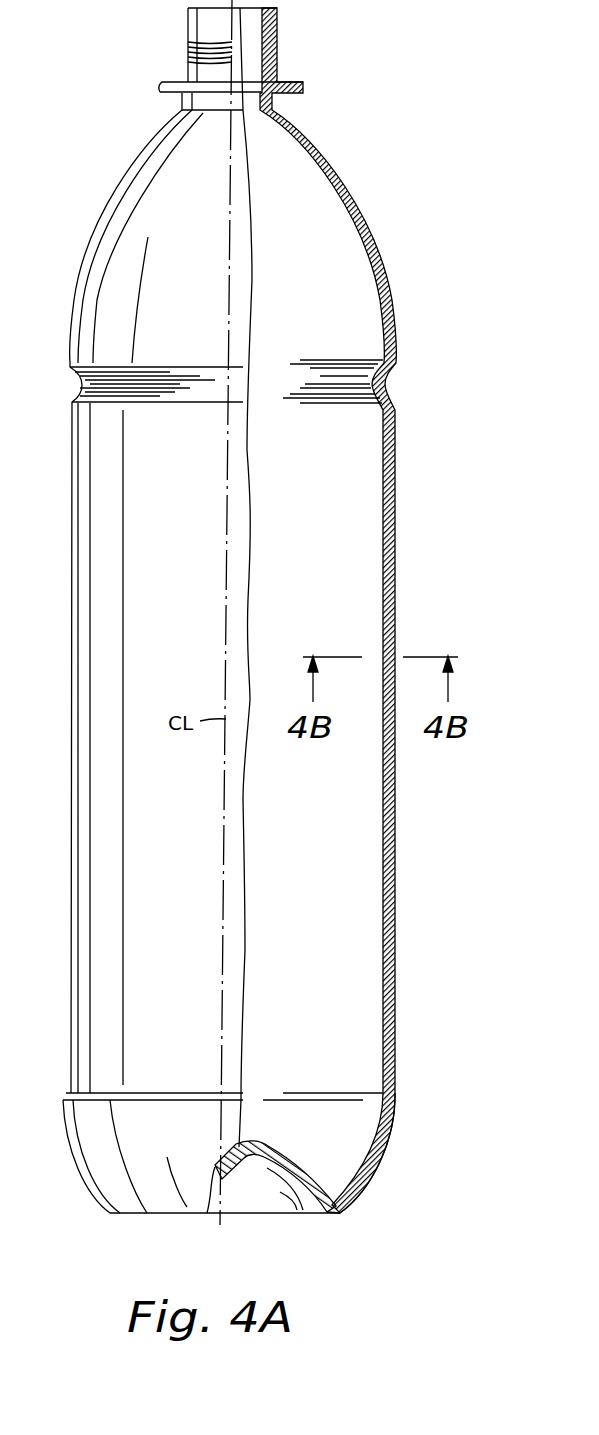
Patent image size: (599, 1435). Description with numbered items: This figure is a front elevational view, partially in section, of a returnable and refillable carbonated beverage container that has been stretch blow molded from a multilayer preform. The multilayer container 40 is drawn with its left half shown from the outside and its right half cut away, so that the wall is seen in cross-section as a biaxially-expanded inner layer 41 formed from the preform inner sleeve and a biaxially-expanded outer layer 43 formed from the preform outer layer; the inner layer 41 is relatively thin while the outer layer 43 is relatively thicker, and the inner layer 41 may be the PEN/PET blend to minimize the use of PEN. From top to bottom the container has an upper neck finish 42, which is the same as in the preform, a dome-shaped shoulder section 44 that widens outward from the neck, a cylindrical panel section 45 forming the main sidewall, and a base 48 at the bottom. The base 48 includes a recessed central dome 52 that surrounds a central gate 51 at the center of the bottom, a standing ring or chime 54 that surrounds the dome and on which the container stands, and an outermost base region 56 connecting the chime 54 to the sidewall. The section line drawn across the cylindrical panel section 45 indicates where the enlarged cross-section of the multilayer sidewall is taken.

The multilayer container 40 is at (408, 582).
The inner layer 41 is at (382, 835).
The upper neck finish 42 is at (278, 37).
The outer layer 43 is at (395, 832).
The dome-shaped shoulder section 44 is at (370, 227).
The cylindrical panel section 45 is at (395, 483).
The base 48 is at (145, 1213).
The central gate 51 is at (223, 1173).
The recessed central dome 52 is at (279, 1192).
The standing ring or chime 54 is at (340, 1213).
The outermost base region 56 is at (377, 1170).